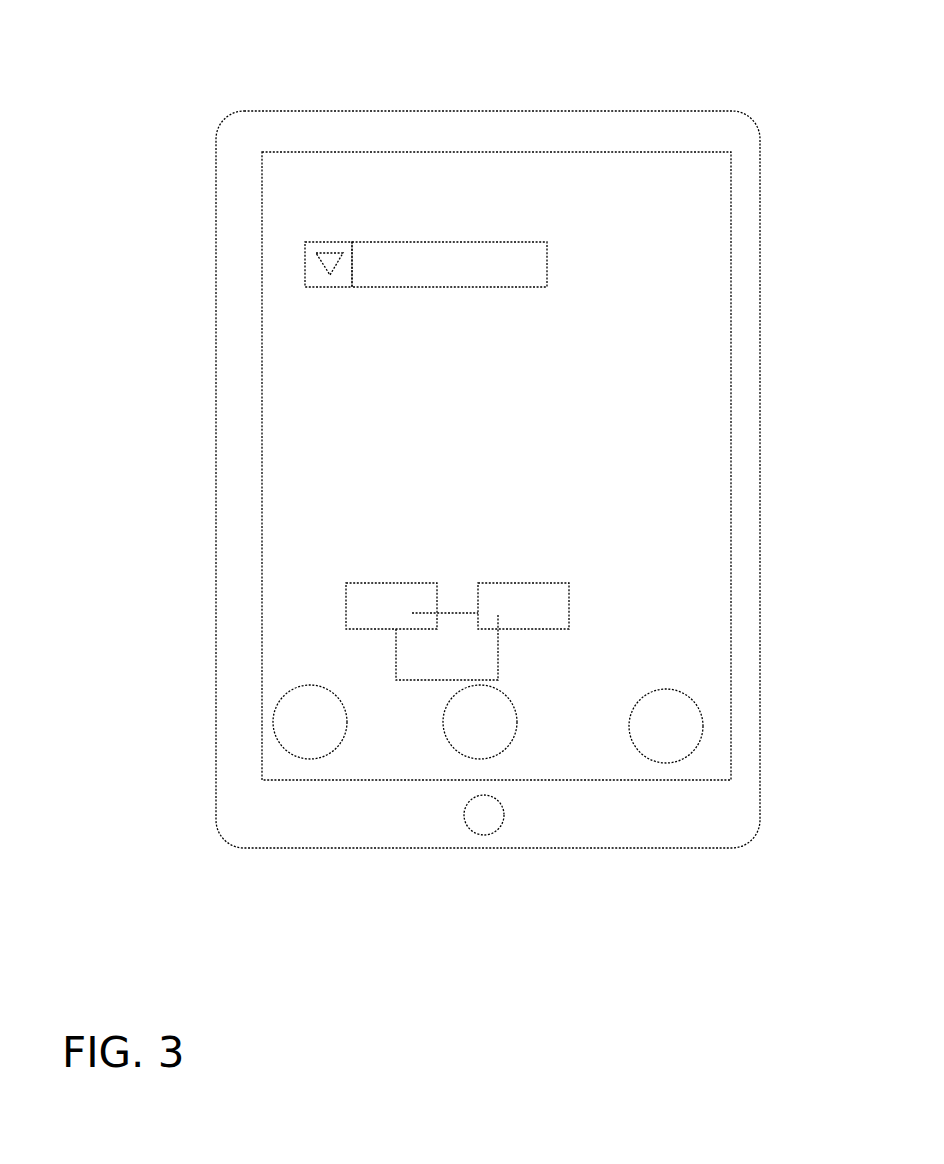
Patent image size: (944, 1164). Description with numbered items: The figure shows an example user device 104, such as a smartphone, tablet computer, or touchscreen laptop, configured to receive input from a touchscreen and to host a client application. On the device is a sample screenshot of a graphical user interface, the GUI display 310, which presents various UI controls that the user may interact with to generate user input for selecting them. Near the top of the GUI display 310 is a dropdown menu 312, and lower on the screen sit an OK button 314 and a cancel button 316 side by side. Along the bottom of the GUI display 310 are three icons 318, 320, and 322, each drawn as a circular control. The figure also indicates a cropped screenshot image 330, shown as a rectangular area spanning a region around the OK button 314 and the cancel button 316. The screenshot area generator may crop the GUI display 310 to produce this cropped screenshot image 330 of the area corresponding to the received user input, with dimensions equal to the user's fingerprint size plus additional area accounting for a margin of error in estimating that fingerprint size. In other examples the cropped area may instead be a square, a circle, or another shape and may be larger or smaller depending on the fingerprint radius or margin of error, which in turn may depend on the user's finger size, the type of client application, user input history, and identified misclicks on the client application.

The user device 104 is at (706, 108).
The GUI display 310 is at (714, 207).
The dropdown menu 312 is at (461, 243).
The OK button 314 is at (415, 572).
The cancel button 316 is at (562, 572).
The icon 318 is at (310, 722).
The icon 320 is at (480, 722).
The icon 322 is at (666, 726).
The cropped screenshot image 330 is at (514, 648).